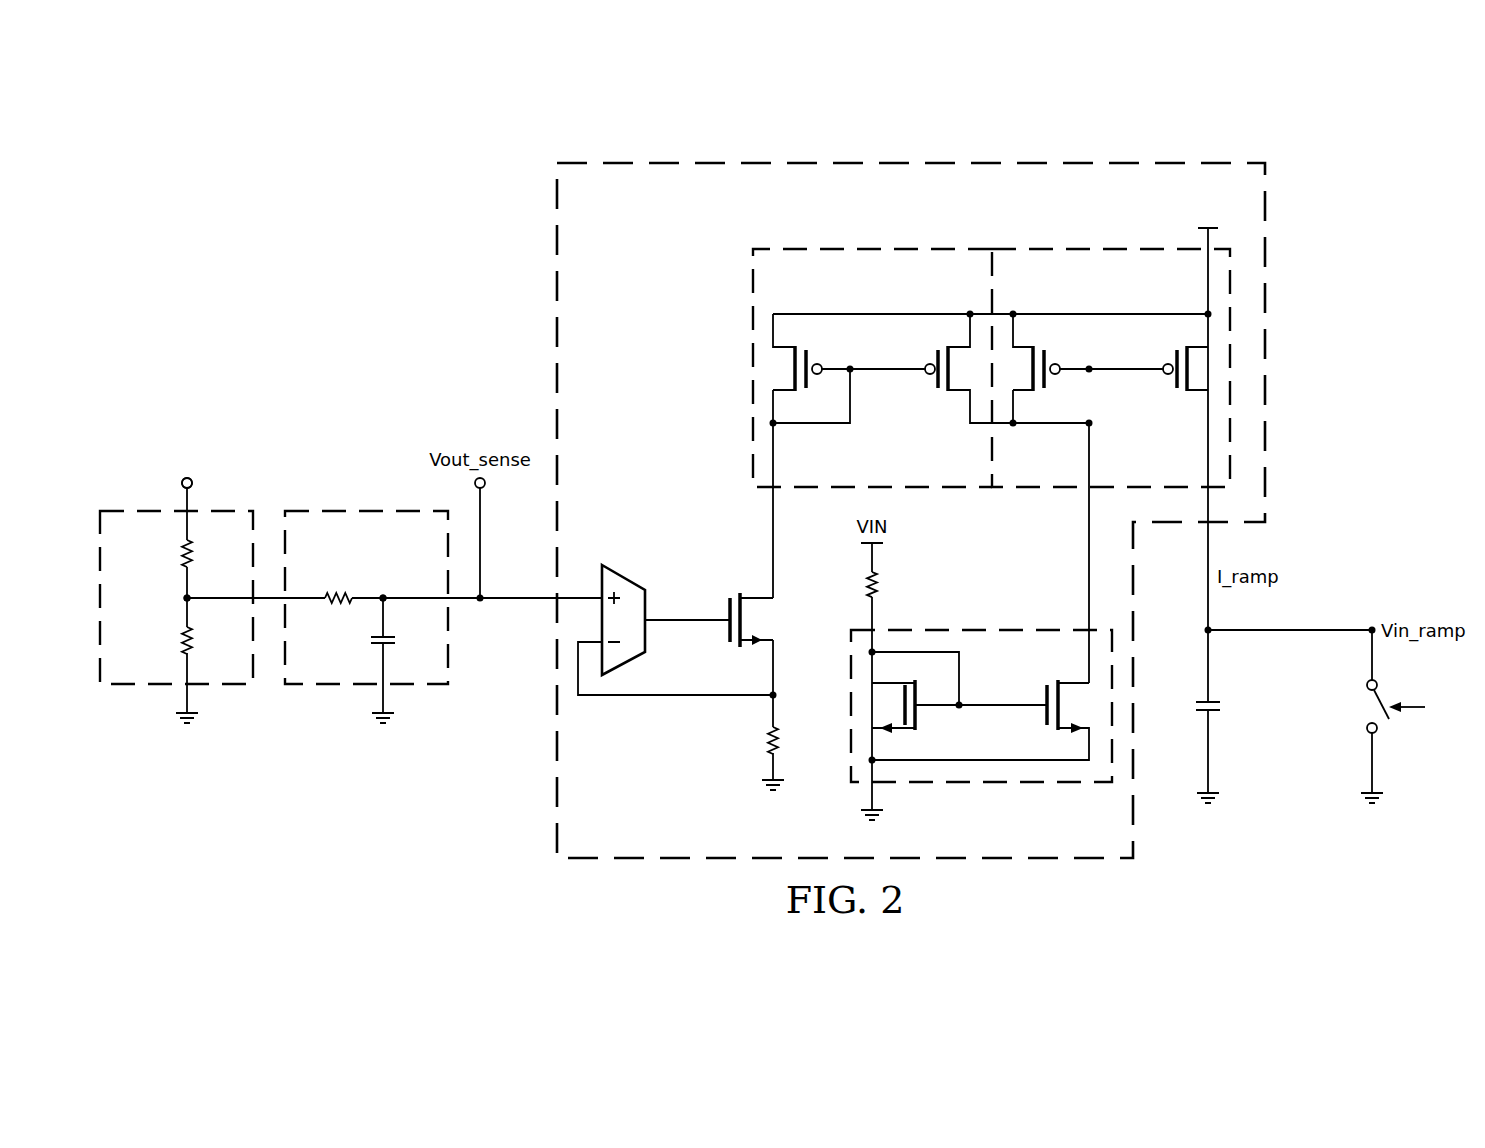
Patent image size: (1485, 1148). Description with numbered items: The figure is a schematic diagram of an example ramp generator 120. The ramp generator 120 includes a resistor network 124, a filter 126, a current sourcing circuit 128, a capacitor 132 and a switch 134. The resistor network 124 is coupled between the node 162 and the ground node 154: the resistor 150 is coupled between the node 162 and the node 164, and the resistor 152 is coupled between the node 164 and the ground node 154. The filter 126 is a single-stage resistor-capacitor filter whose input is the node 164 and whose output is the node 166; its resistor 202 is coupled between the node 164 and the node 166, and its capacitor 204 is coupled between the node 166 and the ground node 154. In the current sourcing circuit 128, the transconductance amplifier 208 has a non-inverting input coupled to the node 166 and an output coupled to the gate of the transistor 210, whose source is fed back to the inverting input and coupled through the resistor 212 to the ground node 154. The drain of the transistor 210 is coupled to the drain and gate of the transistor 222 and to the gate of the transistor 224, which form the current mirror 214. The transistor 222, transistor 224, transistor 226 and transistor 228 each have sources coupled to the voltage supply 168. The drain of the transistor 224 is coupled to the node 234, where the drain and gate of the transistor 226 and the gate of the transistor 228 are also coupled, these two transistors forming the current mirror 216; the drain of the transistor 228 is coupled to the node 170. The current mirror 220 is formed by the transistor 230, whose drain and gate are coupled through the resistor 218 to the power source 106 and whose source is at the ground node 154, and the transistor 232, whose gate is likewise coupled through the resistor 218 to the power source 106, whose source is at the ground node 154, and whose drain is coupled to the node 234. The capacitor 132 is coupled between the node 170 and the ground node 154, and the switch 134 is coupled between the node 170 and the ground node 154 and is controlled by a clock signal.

The power source 106 is at (876, 563).
The ramp generator 120 is at (323, 145).
The resistor network 124 is at (179, 510).
The filter 126 is at (345, 510).
The current sourcing circuit 128 is at (890, 218).
The capacitor 132 is at (1222, 709).
The switch 134 is at (1370, 693).
The resistor 150 is at (183, 553).
The resistor 152 is at (183, 636).
The ground node 154 is at (176, 714).
The node 162 is at (192, 481).
The node 164 is at (192, 603).
The node 166 is at (388, 603).
The voltage supply 168 is at (1210, 226).
The node 170 is at (1368, 637).
The resistor 202 is at (340, 594).
The capacitor 204 is at (372, 641).
The transconductance amplifier 208 is at (625, 576).
The transistor 210 is at (728, 607).
The resistor 212 is at (770, 738).
The current mirror 214 is at (850, 295).
The current mirror 216 is at (1090, 295).
The resistor 218 is at (870, 585).
The current mirror 220 is at (1004, 630).
The transistor 222 is at (813, 361).
The transistor 224 is at (931, 376).
The transistor 226 is at (1053, 361).
The transistor 228 is at (1171, 376).
The transistor 230 is at (925, 711).
The transistor 232 is at (1044, 696).
The node 234 is at (1087, 429).